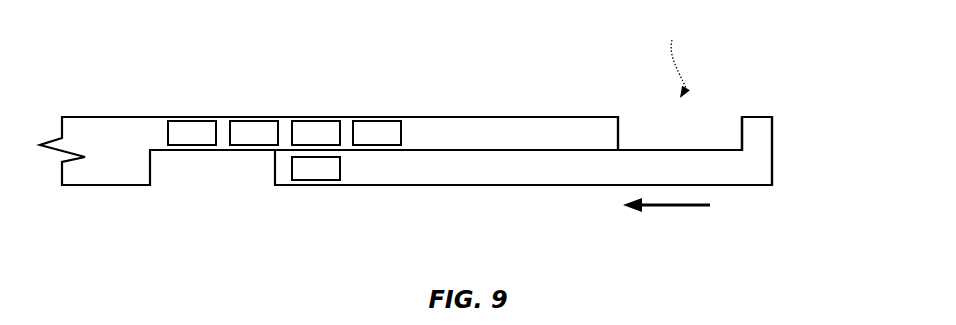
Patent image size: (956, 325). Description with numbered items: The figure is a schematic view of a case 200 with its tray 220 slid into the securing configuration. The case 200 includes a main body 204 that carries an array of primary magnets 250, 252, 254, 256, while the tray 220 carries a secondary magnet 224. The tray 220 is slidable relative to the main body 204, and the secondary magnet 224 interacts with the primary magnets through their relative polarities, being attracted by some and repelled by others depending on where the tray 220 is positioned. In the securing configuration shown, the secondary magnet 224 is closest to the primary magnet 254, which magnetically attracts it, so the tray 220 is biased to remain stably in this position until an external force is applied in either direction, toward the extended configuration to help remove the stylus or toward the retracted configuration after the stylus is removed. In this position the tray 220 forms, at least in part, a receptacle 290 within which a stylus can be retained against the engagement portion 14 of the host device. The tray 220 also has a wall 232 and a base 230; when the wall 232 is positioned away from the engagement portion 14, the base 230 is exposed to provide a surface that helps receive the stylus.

The case 200 is at (114, 30).
The main body 204 is at (490, 135).
The engagement portion 14 is at (620, 128).
The tray 220 is at (528, 168).
The secondary magnet 224 is at (313, 181).
The base 230 is at (712, 148).
The wall 232 is at (765, 130).
The primary magnet 250 is at (193, 121).
The primary magnet 252 is at (257, 121).
The primary magnet 254 is at (318, 121).
The primary magnet 256 is at (378, 121).
The receptacle 290 is at (683, 59).